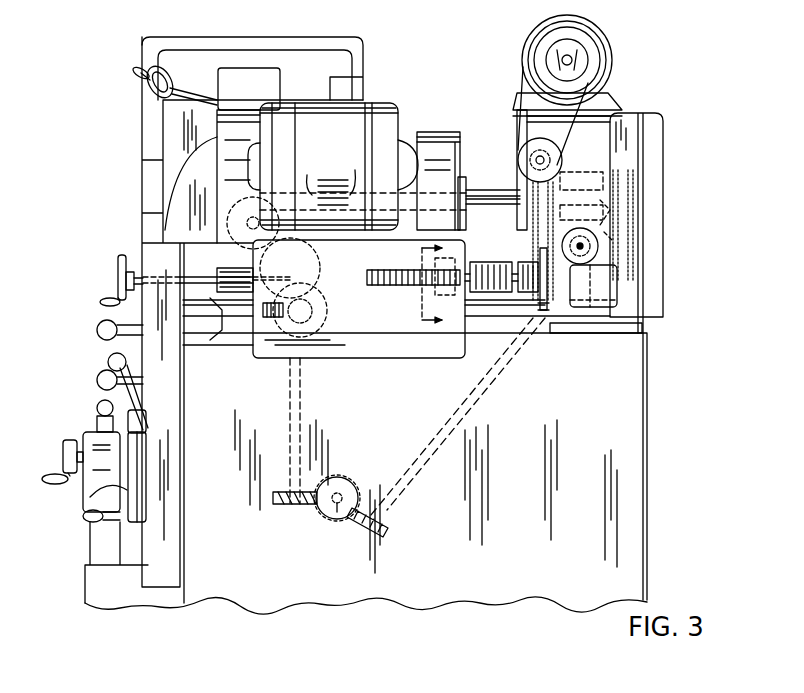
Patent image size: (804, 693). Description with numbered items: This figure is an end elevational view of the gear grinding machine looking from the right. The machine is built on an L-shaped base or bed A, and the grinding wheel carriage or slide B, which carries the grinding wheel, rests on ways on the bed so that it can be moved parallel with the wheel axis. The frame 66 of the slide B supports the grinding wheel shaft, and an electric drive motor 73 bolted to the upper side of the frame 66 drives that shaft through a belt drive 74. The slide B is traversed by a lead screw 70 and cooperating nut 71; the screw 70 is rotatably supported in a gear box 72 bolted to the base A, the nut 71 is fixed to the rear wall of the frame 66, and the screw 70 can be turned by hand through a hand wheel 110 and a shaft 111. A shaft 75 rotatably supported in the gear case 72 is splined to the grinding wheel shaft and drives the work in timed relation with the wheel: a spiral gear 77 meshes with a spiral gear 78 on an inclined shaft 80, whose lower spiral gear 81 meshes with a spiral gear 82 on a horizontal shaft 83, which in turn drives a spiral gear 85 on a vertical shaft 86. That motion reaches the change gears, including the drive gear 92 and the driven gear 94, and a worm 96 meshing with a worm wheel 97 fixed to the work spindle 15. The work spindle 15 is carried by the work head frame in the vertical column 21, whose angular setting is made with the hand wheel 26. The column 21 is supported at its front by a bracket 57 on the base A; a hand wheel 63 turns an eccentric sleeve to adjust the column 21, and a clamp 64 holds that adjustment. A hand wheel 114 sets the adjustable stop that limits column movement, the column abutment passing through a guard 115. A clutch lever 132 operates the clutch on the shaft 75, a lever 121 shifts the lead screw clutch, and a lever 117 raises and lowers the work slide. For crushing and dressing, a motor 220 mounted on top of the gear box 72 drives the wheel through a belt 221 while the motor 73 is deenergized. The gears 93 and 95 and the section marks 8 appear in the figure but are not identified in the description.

The column 21 is at (290, 45).
The hand wheel 26 is at (150, 95).
The electric drive motor 73 is at (378, 115).
The belt drive 74 is at (442, 130).
The shaft 75 is at (492, 192).
The motor 220 is at (598, 42).
The belt 221 is at (568, 125).
The spiral gear 78 is at (620, 167).
The spiral gear 77 is at (625, 180).
The gear box 72 is at (632, 312).
The guard 115 is at (577, 310).
The frame 66 is at (402, 347).
The drive gear 92 is at (267, 207).
The gear 93 is at (312, 262).
The driven gear 94 is at (323, 315).
The worm shaft 95 is at (313, 280).
The worm 96 is at (300, 353).
The nut 71 is at (422, 252).
The lead screw 70 is at (403, 282).
The section line 8- 8 is at (438, 286).
The shaft 111 is at (213, 283).
The hand wheel 110 is at (115, 273).
The clutch lever 132 is at (98, 330).
The lever 117 is at (108, 358).
The lever 121 is at (97, 382).
The clamp 64 is at (97, 410).
The hand wheel 63 is at (62, 453).
The hand wheel 114 is at (123, 493).
The bracket 57 is at (105, 533).
The worm wheel 97 is at (210, 313).
The work spindle 15 is at (245, 335).
The inclined shaft 80 is at (487, 383).
The vertical shaft 86 is at (292, 445).
The spiral gear 85 is at (273, 503).
The horizontal shaft 83 is at (325, 520).
The spiral gear 82 is at (347, 473).
The spiral gear 81 is at (387, 528).
The base or bed A is at (628, 480).
The grinding wheel carriage or slide B is at (355, 348).